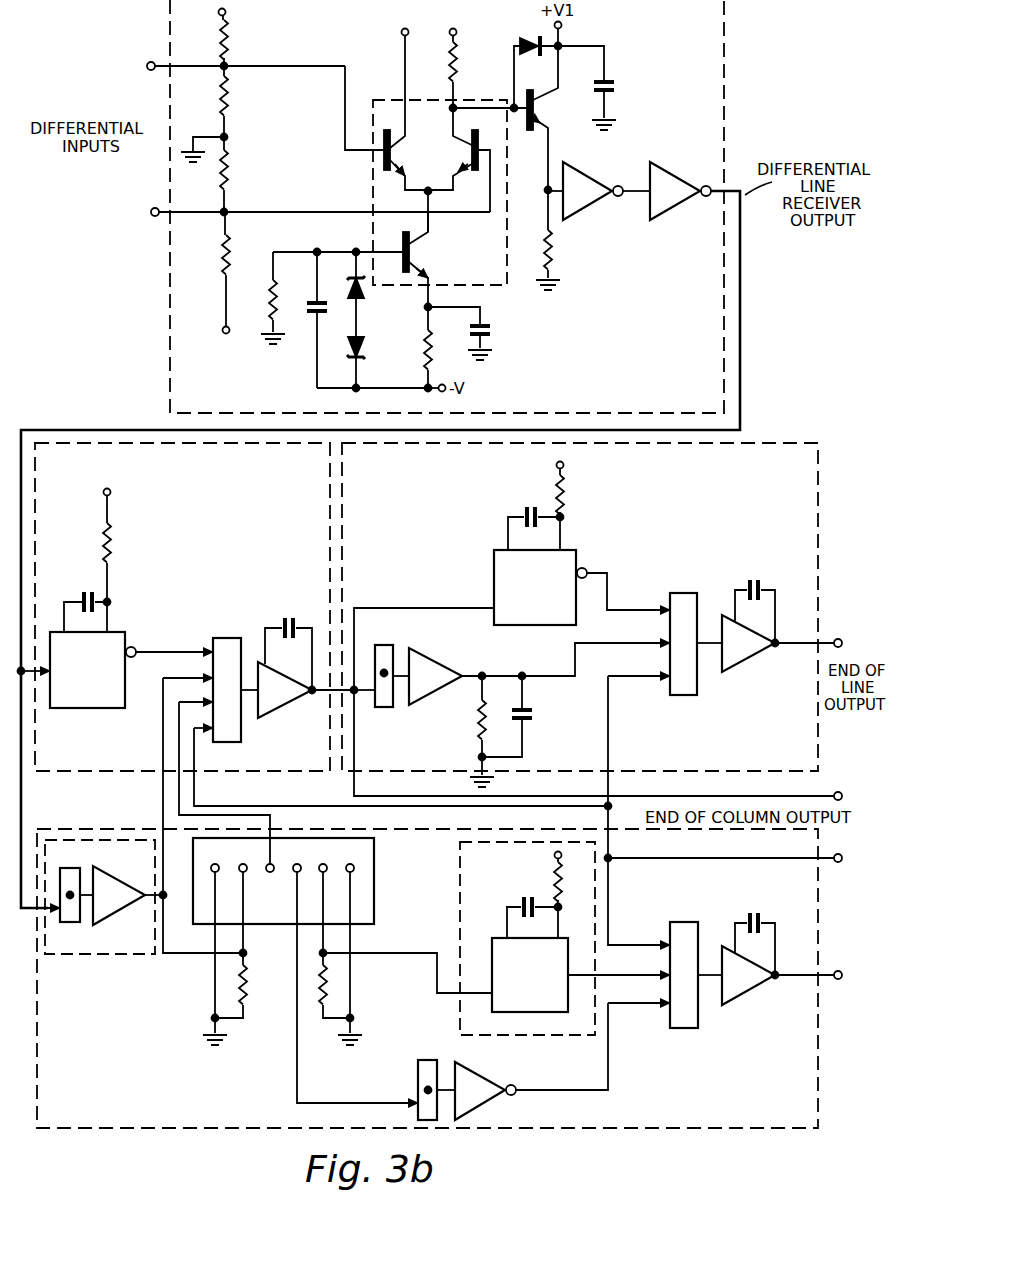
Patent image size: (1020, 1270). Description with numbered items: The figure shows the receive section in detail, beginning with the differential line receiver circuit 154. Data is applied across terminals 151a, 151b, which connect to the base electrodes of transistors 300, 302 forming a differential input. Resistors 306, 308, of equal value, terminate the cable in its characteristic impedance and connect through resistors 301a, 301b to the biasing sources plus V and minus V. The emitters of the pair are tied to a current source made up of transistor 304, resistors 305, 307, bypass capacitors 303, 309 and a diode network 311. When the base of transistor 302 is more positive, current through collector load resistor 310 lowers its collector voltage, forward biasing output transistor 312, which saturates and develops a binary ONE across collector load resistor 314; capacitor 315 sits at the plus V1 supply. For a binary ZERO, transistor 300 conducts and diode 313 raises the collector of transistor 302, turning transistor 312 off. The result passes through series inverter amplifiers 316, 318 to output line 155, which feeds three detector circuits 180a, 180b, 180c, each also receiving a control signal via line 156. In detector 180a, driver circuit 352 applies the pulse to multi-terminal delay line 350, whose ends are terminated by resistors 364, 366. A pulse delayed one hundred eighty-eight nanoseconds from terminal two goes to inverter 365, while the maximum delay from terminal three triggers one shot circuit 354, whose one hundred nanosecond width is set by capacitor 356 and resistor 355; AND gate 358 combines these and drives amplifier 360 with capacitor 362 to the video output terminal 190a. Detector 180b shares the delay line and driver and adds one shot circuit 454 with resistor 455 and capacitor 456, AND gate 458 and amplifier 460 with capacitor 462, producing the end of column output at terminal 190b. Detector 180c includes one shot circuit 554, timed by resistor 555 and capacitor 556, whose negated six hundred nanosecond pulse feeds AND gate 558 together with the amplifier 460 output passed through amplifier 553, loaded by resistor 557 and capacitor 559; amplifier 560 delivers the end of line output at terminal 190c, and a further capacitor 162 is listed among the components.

The input terminal 151a is at (112, 160).
The input terminal 151b is at (112, 114).
The receiver circuit 154 is at (350, 13).
The output line 155 is at (742, 314).
The control signal line 156 is at (738, 874).
The capacitor 162 is at (608, 905).
The detector circuit 180a is at (112, 1106).
The detector circuit 180b is at (272, 468).
The detector circuit 180c is at (766, 468).
The video output terminal 190a is at (825, 979).
The end of column output terminal 190b is at (614, 745).
The end of line output terminal 190c is at (784, 631).
The transistor 300 is at (400, 158).
The resistor 301a is at (229, 46).
The resistor 301b is at (202, 285).
The transistor 302 is at (458, 166).
The bypass capacitor 303 is at (490, 327).
The transistor 304 is at (420, 268).
The resistor 305 is at (422, 348).
The resistor 306 is at (229, 104).
The resistor 307 is at (268, 305).
The resistor 308 is at (229, 176).
The bypass capacitor 309 is at (311, 318).
The collector load resistor 310 is at (458, 62).
The diode network 311 is at (360, 316).
The output transistor 312 is at (541, 108).
The diode 313 is at (518, 38).
The collector load resistor 314 is at (553, 244).
The capacitor 315 is at (613, 95).
The inverter amplifier circuit 316 is at (586, 170).
The inverter amplifier circuit 318 is at (668, 170).
The multi-terminal delay line 350 is at (375, 905).
The driver circuit 352 is at (130, 955).
The one shot circuit 354 is at (460, 890).
The resistor 355 is at (552, 878).
The capacitor 356 is at (522, 905).
The AND gate 358 is at (680, 921).
The amplifier 360 is at (738, 1000).
The capacitor 362 is at (762, 912).
The resistor 364 is at (247, 992).
The inverter circuit 365 is at (480, 1072).
The resistor 366 is at (322, 985).
The one shot circuit 454 is at (80, 709).
The resistor 455 is at (112, 542).
The capacitor 456 is at (80, 592).
The AND gate 458 is at (216, 637).
The amplifier 460 is at (270, 722).
The capacitor 462 is at (287, 618).
The amplifier 553 is at (430, 658).
The one shot circuit 554 is at (578, 555).
The resistor 555 is at (566, 504).
The capacitor 556 is at (526, 508).
The resistor 557 is at (478, 723).
The AND gate 558 is at (684, 592).
The capacitor 559 is at (533, 712).
The amplifier 560 is at (760, 579).